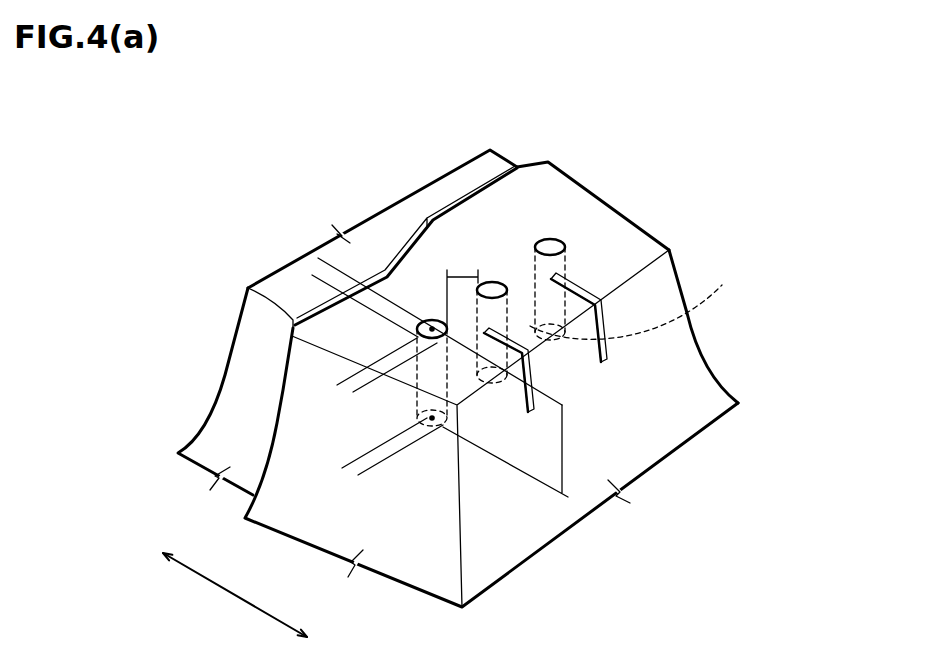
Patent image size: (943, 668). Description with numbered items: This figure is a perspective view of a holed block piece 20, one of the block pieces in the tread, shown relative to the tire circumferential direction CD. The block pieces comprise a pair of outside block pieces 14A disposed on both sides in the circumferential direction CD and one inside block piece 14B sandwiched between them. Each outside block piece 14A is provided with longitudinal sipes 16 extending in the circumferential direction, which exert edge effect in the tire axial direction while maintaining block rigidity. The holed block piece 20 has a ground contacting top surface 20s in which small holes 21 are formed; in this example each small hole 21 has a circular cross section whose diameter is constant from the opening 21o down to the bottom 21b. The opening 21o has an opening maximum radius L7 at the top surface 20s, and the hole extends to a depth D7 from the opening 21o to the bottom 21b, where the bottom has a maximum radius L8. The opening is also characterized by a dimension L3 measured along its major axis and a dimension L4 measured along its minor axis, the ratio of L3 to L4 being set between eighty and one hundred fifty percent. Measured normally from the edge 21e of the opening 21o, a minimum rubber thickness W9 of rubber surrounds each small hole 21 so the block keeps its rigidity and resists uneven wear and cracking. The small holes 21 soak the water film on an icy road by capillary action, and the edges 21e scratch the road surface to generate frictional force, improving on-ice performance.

The holed block piece 20 is at (465, 360).
The outside block piece 14A is at (557, 197).
The inside block piece 14B is at (482, 173).
The ground contacting top surface 20s is at (248, 286).
The small hole 21 is at (546, 247).
The opening 21o is at (557, 233).
The edge of the opening 21e is at (740, 176).
The bottom 21b is at (643, 299).
The longitudinal sipe 16 is at (580, 287).
The dimension of the opening along the minor axis L4 is at (348, 278).
The minimum rubber thickness W9 is at (461, 287).
The dimension of the opening along the major axis L3 is at (358, 386).
The opening maximum radius L7 is at (342, 409).
The maximum radius at the bottom L8 is at (358, 475).
The depth D7 is at (509, 451).
The tire circumferential direction CD is at (235, 595).